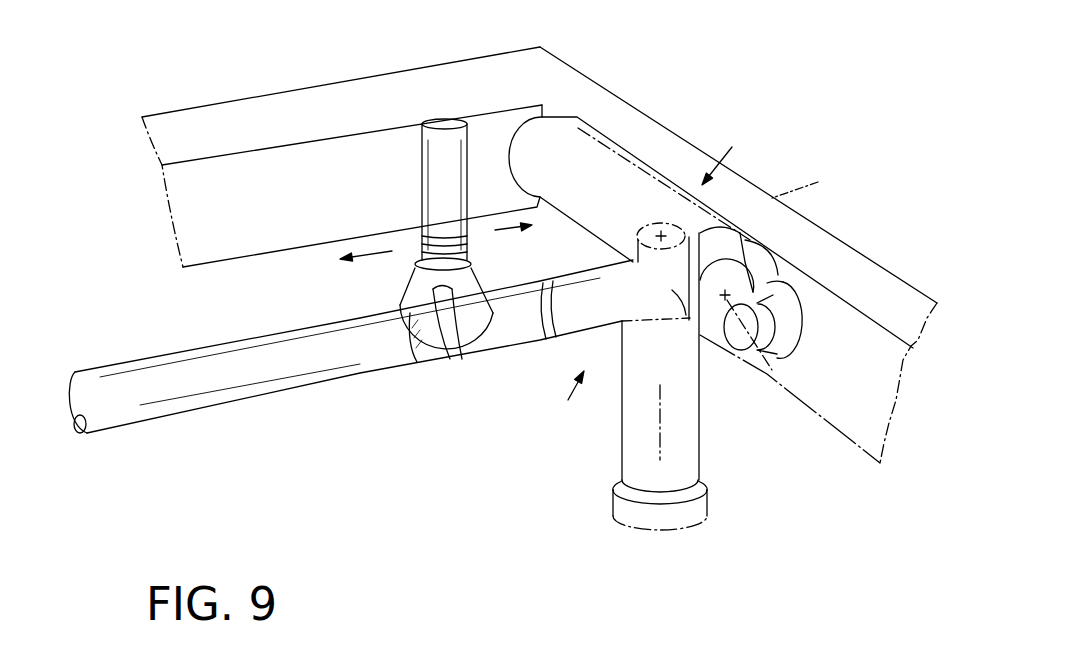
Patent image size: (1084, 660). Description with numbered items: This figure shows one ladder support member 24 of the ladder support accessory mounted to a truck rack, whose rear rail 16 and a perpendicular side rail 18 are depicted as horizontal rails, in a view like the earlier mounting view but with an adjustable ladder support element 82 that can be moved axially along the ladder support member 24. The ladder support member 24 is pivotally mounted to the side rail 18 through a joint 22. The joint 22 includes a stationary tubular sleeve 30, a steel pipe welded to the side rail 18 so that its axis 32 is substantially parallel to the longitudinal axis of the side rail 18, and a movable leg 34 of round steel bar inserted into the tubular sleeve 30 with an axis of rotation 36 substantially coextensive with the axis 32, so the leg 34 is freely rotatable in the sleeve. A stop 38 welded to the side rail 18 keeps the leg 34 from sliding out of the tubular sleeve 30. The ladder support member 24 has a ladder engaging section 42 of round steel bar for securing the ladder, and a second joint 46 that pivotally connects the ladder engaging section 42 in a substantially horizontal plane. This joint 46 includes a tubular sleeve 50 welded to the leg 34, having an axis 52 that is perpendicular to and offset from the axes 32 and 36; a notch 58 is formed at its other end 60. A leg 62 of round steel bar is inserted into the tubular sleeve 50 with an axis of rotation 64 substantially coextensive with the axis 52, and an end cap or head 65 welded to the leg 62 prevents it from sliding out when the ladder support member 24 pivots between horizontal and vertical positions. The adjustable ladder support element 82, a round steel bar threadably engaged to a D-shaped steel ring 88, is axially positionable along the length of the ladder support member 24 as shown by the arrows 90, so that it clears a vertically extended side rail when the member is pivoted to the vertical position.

The rear rail 16 is at (238, 97).
The side rail 18 is at (813, 177).
The joint 22 is at (745, 154).
The ladder support member 24 is at (182, 338).
The tubular sleeve 30 is at (655, 141).
The axis 32 is at (765, 258).
The leg 34 is at (748, 242).
The axis of rotation 36 is at (817, 305).
The stop 38 is at (776, 357).
The ladder engaging section 42 is at (200, 398).
The joint 46 is at (556, 406).
The tubular sleeve 50 is at (618, 421).
The axis 52 is at (660, 390).
The notch 58 is at (672, 302).
The other end 60 is at (710, 223).
The leg 62 is at (624, 228).
The axis of rotation 64 is at (660, 232).
The end cap or head 65 is at (710, 500).
The ladder support element 82 is at (424, 190).
The D-shaped steel ring 88 is at (478, 352).
The arrows 90 is at (379, 258).